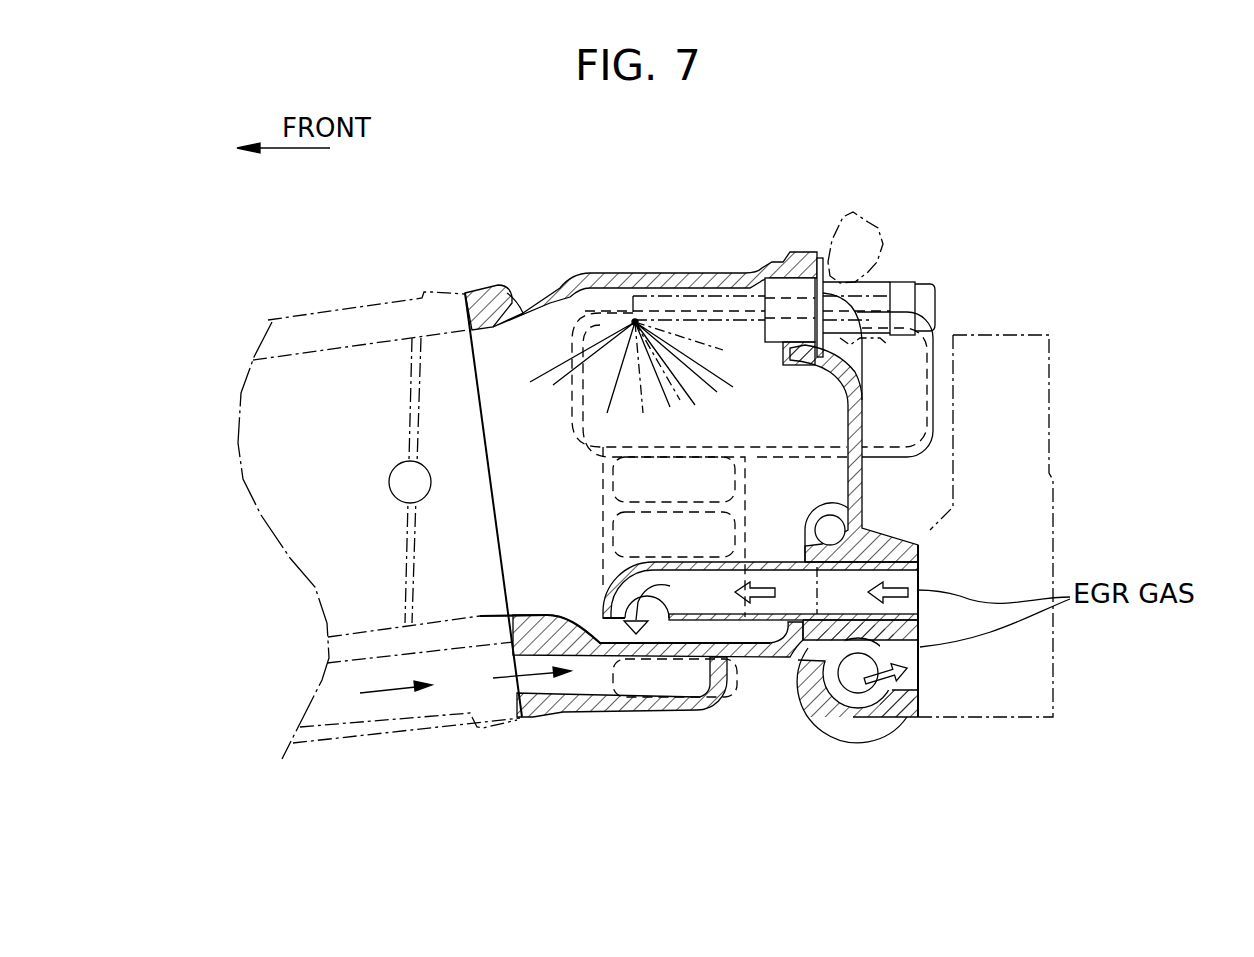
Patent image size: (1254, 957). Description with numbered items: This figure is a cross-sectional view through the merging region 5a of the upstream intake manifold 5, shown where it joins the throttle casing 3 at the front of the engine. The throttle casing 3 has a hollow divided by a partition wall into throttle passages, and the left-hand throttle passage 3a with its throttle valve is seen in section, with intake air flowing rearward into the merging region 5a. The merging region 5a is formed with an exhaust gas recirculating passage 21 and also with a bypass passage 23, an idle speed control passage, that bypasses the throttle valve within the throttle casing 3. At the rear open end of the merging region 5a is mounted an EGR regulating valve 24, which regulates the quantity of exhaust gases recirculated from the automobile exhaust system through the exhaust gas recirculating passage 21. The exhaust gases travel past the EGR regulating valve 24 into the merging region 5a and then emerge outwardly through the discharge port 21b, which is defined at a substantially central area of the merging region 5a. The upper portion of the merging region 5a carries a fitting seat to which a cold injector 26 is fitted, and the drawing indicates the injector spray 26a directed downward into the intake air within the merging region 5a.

The throttle casing 3 is at (297, 322).
The left-hand throttle passage 3a is at (407, 533).
The upstream intake manifold 5 is at (704, 248).
The merging region 5a is at (527, 333).
The exhaust gas recirculating passage 21 is at (830, 600).
The discharge port 21b is at (643, 620).
The bypass passage 23 is at (548, 685).
The EGR regulating valve 24 is at (1050, 478).
The cold injector 26 is at (873, 300).
The fuel spray 26a is at (617, 390).